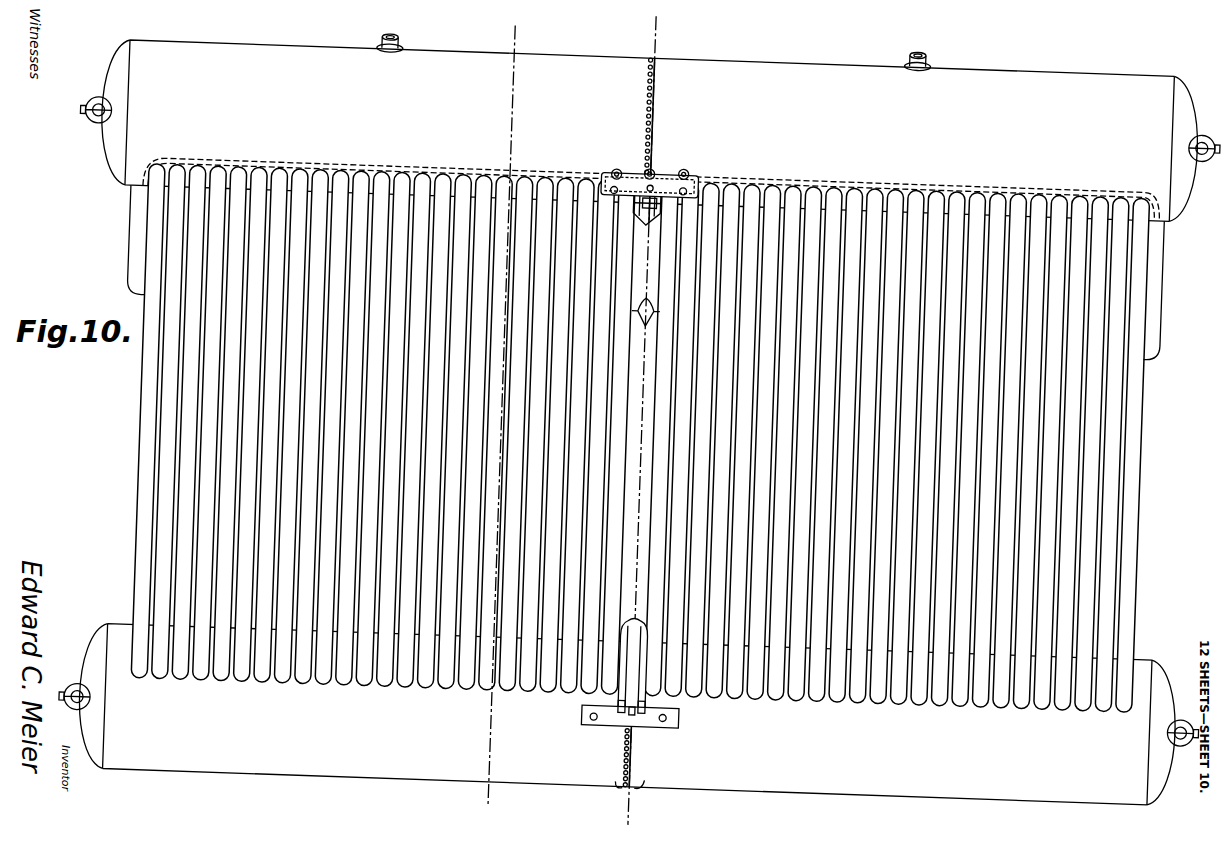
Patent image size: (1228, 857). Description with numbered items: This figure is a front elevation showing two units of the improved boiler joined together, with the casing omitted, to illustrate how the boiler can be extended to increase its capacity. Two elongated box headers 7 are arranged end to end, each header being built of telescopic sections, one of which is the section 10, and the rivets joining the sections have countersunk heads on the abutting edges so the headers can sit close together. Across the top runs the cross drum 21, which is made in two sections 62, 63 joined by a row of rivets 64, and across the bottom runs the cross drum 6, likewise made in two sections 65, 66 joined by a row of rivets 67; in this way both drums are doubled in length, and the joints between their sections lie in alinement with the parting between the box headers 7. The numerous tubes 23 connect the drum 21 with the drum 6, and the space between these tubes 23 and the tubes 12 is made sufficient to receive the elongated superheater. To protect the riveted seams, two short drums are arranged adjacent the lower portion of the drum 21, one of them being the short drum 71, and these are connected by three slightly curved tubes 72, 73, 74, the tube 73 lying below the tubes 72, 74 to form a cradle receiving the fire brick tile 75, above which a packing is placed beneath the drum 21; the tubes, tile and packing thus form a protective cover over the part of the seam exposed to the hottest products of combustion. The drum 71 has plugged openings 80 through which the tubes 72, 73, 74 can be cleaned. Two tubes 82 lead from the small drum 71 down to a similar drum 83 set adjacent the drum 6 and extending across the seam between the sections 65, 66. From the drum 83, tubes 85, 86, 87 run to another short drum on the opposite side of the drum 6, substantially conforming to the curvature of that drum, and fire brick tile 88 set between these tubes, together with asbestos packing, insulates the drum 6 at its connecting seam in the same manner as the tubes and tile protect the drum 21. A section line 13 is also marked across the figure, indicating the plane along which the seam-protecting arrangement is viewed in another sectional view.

The cross drum 6 is at (614, 800).
The box header 7 is at (645, 325).
The telescopic section 10 is at (136, 235).
The tubes 12 is at (530, 792).
The section line 13 is at (670, 807).
The cross drum 21 is at (675, 44).
The tubes 23 is at (178, 409).
The drum section 62 is at (366, 113).
The drum section 63 is at (936, 133).
The rivets 64 is at (649, 80).
The drum section 65 is at (346, 704).
The drum section 66 is at (915, 724).
The rivets 67 is at (650, 733).
The short drum 71 is at (612, 160).
The tube 72 is at (656, 170).
The tube 73 is at (665, 180).
The tube 74 is at (695, 176).
The fire brick tile 75 is at (668, 186).
The plugged openings 80 is at (651, 154).
The tubes 82 is at (601, 157).
The short drum 83 is at (606, 700).
The tube 85 is at (644, 688).
The tube 86 is at (652, 600).
The tube 87 is at (657, 694).
The fire brick tile 88 is at (666, 690).